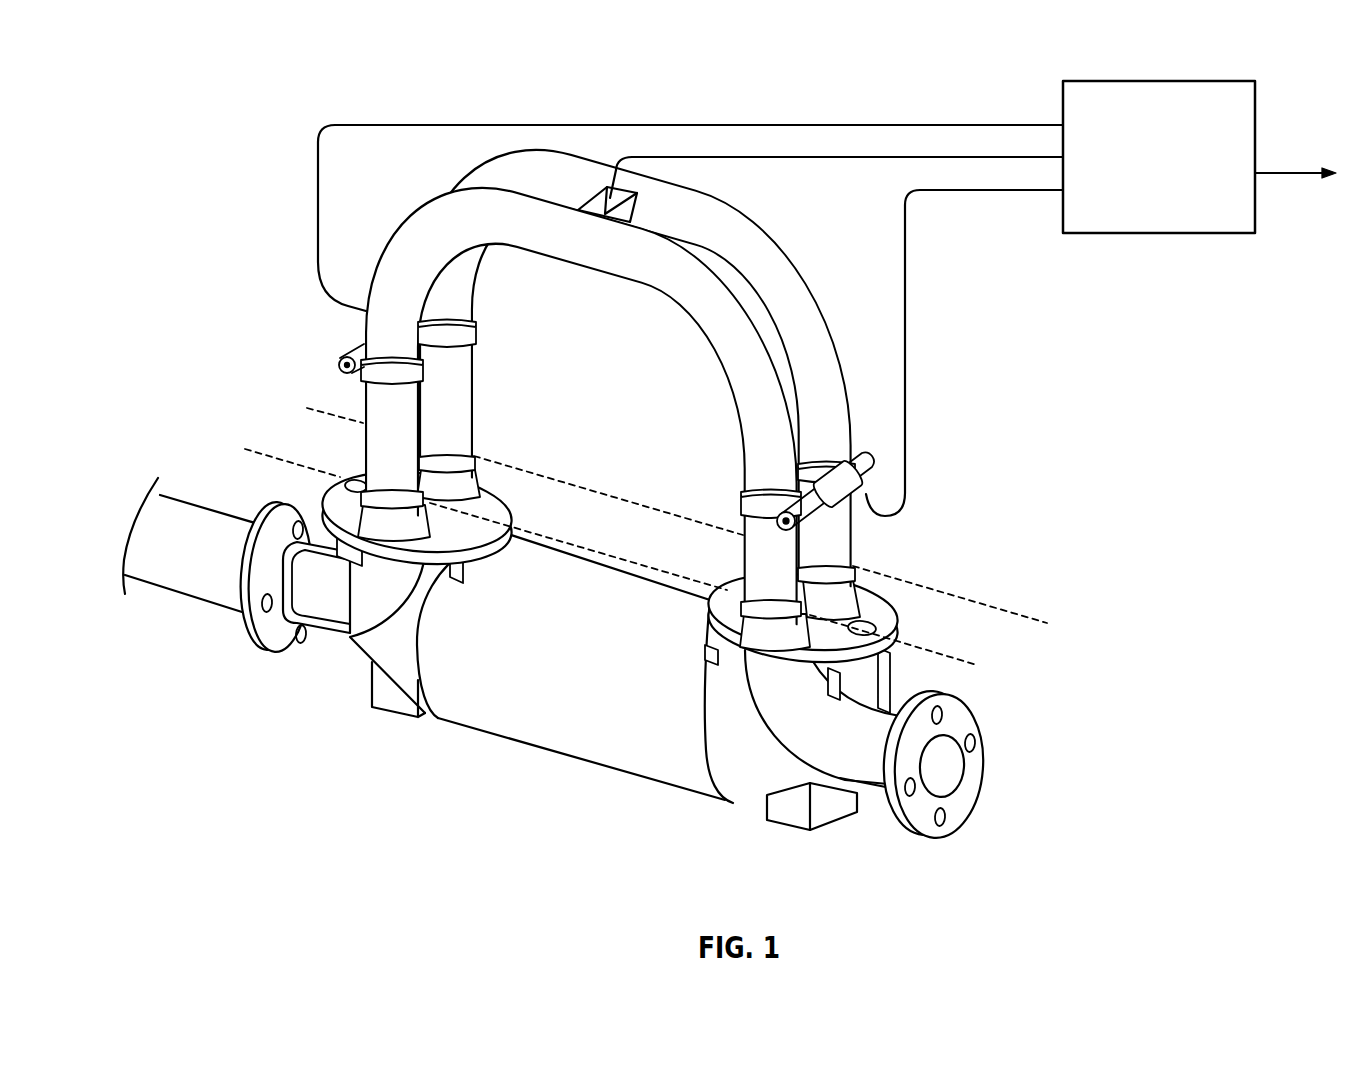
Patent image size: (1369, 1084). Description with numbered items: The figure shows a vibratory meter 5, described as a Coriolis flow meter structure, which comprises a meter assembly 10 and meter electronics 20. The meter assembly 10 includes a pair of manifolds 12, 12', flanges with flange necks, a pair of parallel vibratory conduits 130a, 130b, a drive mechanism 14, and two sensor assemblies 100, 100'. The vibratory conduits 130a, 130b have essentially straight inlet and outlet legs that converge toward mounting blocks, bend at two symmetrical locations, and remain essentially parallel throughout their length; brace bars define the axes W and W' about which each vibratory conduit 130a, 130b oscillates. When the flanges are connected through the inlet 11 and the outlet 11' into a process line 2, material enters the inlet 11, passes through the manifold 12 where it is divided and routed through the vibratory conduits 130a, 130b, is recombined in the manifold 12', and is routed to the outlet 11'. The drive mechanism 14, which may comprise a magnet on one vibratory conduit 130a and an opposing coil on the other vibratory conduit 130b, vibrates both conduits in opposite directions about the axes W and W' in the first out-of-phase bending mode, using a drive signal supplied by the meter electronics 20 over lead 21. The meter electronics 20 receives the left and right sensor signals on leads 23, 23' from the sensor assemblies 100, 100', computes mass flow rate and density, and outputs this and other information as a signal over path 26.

The meter assembly 10 is at (138, 174).
The vibratory meter 5 is at (1088, 455).
The process line 2 is at (189, 590).
The inlet 11 is at (266, 563).
The outlet 11' is at (958, 764).
The manifold 12 is at (354, 629).
The manifold 12' is at (814, 760).
The drive mechanism 14 is at (600, 205).
The meter electronics 20 is at (1157, 234).
The lead 21 is at (868, 158).
The lead 23 is at (690, 218).
The lead 23' is at (945, 353).
The path 26 is at (1290, 175).
The sensor assembly 100 is at (471, 364).
The sensor assembly 100' is at (738, 481).
The vibratory conduit 130a is at (645, 272).
The vibratory conduit 130b is at (697, 212).
The axis W is at (678, 514).
The axis W' is at (612, 553).